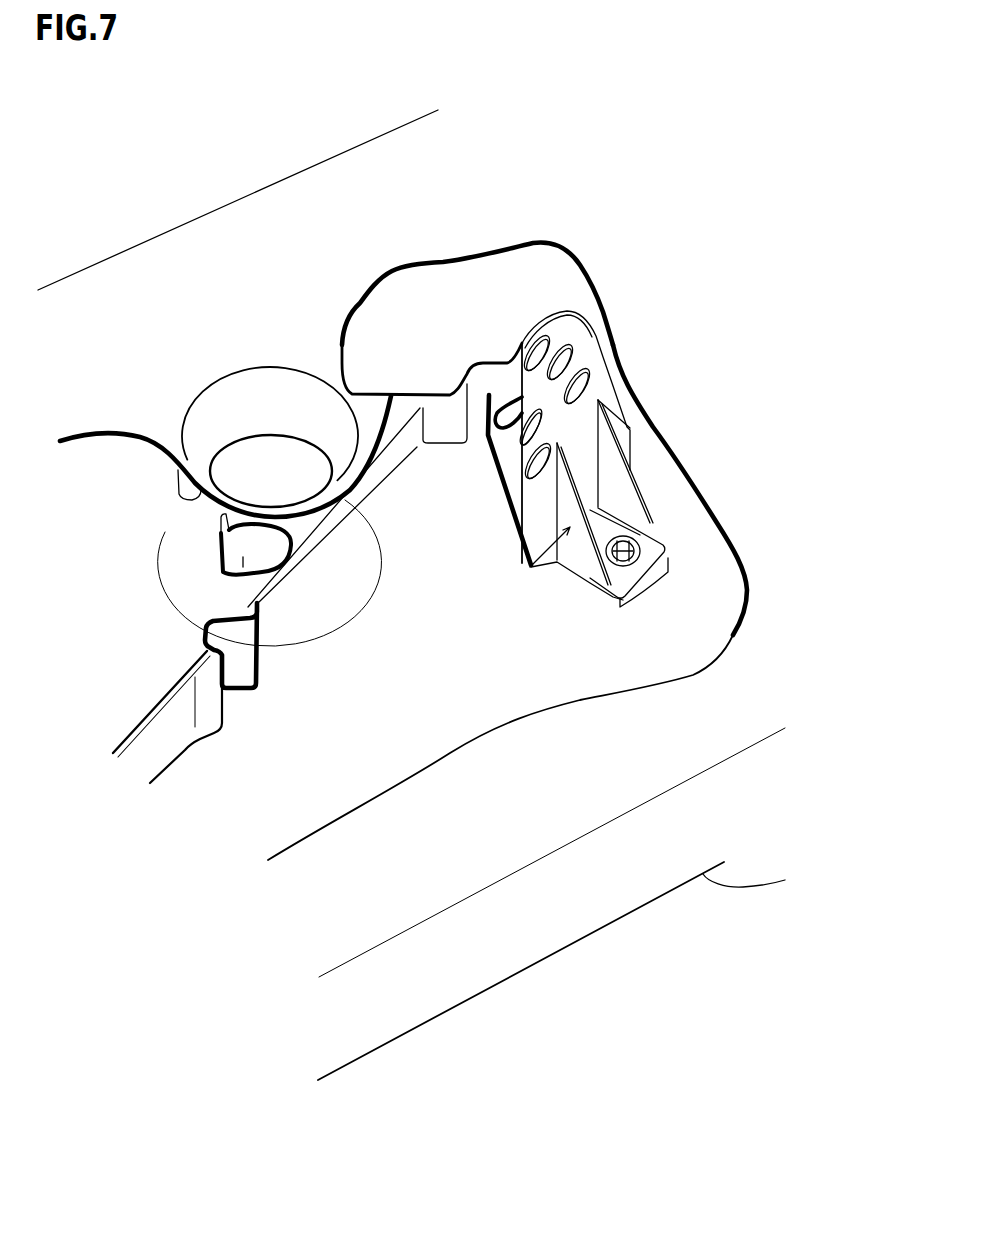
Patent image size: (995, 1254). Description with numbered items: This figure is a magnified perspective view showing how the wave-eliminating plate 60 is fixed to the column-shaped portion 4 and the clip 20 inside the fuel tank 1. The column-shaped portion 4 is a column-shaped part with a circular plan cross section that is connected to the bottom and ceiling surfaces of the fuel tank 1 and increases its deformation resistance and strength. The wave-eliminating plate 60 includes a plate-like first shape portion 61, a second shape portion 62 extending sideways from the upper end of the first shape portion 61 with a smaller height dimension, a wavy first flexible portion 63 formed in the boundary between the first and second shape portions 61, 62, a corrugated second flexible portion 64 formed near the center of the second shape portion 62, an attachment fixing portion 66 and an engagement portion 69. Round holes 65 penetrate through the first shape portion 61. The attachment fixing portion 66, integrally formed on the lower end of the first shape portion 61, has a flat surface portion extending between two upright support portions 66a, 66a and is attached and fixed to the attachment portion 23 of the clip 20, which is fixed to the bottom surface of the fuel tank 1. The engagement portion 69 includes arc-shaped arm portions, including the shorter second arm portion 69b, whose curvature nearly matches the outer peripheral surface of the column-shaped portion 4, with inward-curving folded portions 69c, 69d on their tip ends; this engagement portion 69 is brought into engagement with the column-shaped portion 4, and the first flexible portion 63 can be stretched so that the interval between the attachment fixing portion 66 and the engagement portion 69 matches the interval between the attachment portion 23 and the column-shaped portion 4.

The fuel tank 1 is at (386, 187).
The column-shaped portion 4 is at (230, 417).
The wave-eliminating plate 60 is at (388, 410).
The first flexible portion 63 is at (465, 392).
The first shape portion 61 is at (575, 328).
The round holes 65 is at (578, 373).
The support portions 66a is at (618, 494).
The attachment portion 23 is at (647, 550).
The clip 20 is at (657, 590).
The attachment fixing portion 66 is at (537, 565).
The second shape portion 62 is at (157, 744).
The second flexible portion 64 is at (203, 652).
The folded portion 69c is at (180, 478).
The folded portion 69d is at (218, 558).
The engagement portion 69 is at (220, 573).
The second arm portion 69b is at (243, 558).